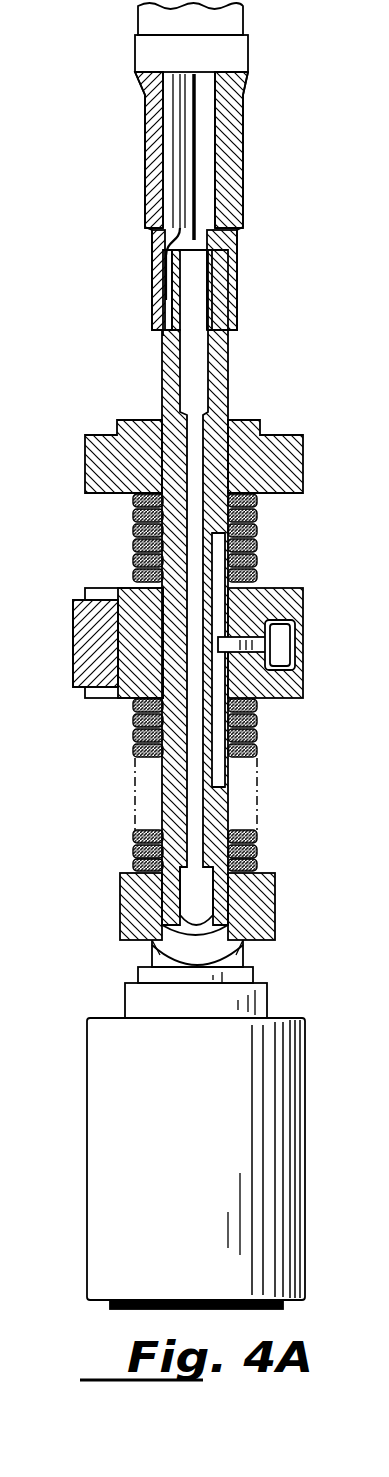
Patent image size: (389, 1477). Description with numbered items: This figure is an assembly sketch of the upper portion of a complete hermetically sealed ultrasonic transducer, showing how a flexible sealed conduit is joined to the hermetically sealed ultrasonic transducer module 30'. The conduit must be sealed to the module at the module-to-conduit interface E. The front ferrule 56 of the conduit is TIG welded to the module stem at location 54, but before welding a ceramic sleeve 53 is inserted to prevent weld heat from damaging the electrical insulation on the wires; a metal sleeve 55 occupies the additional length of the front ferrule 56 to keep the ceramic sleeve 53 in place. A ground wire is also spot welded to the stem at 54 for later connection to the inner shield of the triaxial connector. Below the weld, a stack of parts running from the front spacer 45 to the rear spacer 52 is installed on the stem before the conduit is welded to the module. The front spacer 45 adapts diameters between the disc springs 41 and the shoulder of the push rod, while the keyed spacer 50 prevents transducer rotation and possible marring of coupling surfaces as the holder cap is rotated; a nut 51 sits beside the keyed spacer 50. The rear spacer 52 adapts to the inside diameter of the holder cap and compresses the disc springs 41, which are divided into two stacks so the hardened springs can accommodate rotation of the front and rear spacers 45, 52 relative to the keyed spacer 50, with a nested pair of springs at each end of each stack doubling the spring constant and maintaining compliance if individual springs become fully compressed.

The front ferrule 56 is at (245, 127).
The metal sleeve 55 is at (153, 125).
The weld location on module stem 54 is at (153, 270).
The module-to-conduit interface E is at (158, 338).
The ceramic sleeve 53 is at (228, 366).
The rear spacer 52 is at (107, 460).
The disc springs 41 is at (257, 543).
The keyed spacer 50 is at (300, 683).
The lock nut 51 is at (88, 647).
The front spacer 45 is at (135, 895).
The hermetically sealed ultrasonic transducer module 30' is at (196, 1124).